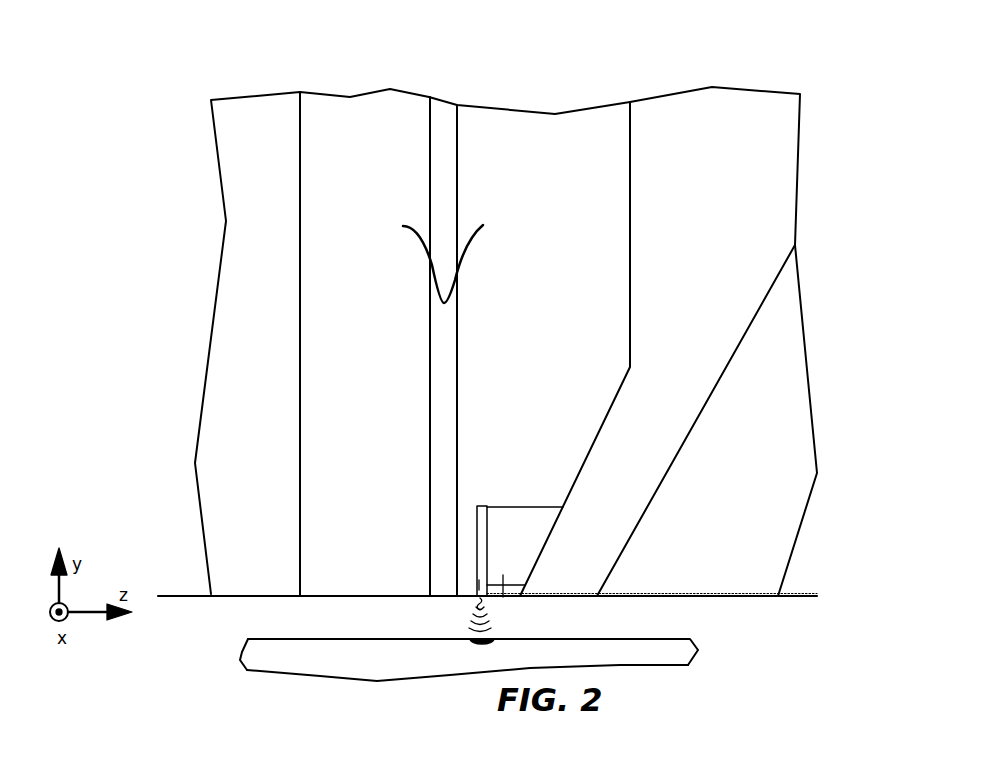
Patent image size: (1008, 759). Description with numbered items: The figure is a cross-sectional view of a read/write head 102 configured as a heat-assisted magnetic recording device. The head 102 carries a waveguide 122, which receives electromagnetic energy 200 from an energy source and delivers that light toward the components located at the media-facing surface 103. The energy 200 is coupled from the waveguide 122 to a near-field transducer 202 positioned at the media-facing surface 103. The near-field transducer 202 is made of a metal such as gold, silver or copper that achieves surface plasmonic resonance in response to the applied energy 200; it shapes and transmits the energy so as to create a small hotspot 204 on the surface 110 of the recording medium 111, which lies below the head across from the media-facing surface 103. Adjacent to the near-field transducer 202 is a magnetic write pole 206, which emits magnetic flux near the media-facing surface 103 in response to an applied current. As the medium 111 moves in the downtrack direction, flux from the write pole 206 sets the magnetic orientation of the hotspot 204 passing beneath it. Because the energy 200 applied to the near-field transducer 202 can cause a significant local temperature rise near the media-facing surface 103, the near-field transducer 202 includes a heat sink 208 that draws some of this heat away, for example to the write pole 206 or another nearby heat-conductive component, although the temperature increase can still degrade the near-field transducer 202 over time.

The read/write head 102 is at (192, 63).
The waveguide 122 is at (590, 65).
The electromagnetic energy 200 is at (425, 257).
The near-field transducer 202 is at (473, 615).
The hotspot 204 is at (483, 643).
The magnetic write pole 206 is at (688, 437).
The heat sink 208 is at (503, 597).
The media-facing surface 103 is at (802, 597).
The surface of medium 110 is at (491, 652).
The recording medium 111 is at (667, 650).